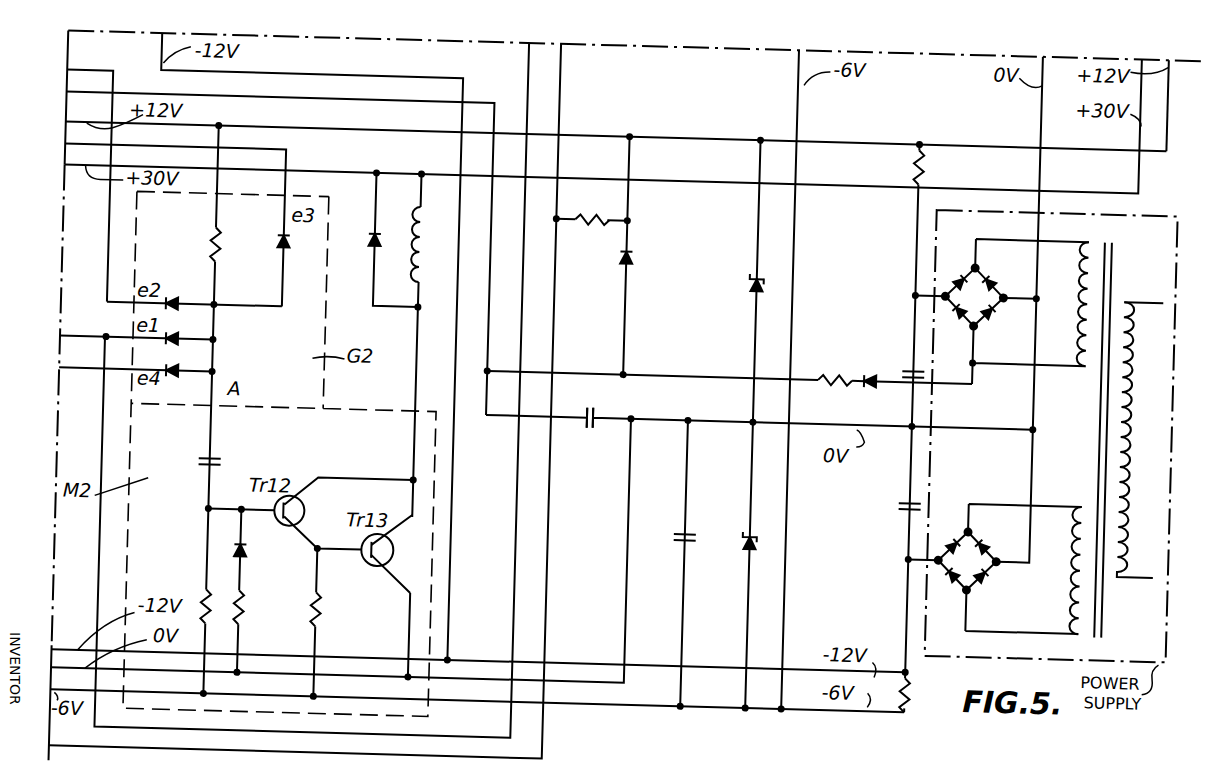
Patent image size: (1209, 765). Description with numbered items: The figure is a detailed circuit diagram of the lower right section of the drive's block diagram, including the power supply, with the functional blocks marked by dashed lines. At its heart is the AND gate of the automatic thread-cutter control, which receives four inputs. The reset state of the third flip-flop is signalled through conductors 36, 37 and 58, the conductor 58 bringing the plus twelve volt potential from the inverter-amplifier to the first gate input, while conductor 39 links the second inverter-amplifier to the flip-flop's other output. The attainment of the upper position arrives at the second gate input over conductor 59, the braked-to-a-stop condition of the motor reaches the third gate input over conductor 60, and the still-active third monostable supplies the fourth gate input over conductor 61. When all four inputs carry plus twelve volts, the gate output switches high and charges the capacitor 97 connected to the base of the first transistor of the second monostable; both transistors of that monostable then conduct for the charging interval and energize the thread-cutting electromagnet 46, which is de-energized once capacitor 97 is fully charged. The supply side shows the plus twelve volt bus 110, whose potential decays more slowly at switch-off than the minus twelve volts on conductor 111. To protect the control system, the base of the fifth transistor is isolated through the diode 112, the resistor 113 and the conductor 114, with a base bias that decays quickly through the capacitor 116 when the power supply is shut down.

The conductor 36 is at (95, 336).
The conductor 37 is at (520, 64).
The conductor 39 is at (552, 72).
The thread-cutting electromagnet 46 is at (410, 230).
The conductor 58 is at (126, 350).
The conductor 59 is at (99, 82).
The conductor 60 is at (281, 165).
The conductor 61 is at (86, 385).
The capacitor 97 is at (220, 470).
The bus 110 is at (703, 117).
The conductor 111 is at (675, 662).
The diode 112 is at (877, 366).
The resistor 113 is at (845, 356).
The conductor 114 is at (154, 98).
The capacitor 116 is at (611, 411).